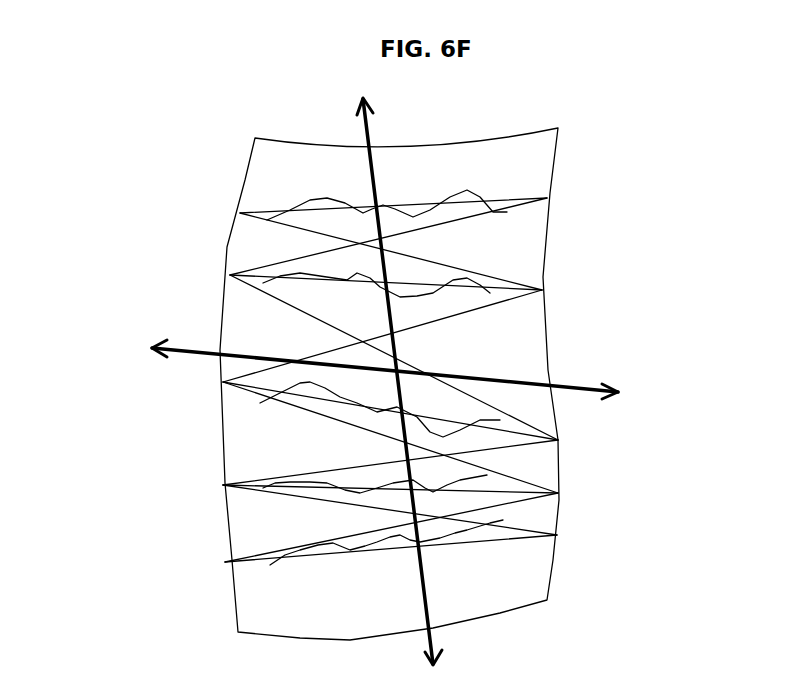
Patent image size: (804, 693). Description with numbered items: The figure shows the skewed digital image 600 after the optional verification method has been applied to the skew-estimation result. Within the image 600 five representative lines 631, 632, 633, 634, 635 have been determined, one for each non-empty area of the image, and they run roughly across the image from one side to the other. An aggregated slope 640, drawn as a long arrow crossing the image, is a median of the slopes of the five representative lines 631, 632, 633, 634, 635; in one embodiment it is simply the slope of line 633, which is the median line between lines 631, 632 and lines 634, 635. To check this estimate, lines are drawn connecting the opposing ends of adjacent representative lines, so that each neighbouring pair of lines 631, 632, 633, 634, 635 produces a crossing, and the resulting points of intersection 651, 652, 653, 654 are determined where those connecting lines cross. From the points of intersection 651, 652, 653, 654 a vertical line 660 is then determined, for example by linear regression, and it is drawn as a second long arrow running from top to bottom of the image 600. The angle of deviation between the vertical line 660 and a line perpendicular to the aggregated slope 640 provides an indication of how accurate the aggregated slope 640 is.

The digital image 600 is at (562, 155).
The representative line 631 is at (548, 197).
The representative line 632 is at (543, 288).
The representative line 633 is at (558, 440).
The representative line 634 is at (558, 493).
The representative line 635 is at (557, 535).
The aggregated slope 640 is at (573, 382).
The point of intersection 651 is at (358, 244).
The point of intersection 652 is at (363, 342).
The point of intersection 653 is at (444, 455).
The point of intersection 654 is at (440, 518).
The vertical line 660 is at (424, 588).